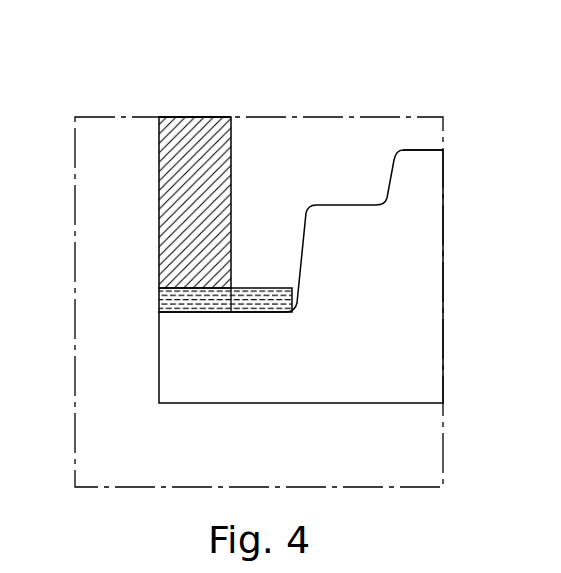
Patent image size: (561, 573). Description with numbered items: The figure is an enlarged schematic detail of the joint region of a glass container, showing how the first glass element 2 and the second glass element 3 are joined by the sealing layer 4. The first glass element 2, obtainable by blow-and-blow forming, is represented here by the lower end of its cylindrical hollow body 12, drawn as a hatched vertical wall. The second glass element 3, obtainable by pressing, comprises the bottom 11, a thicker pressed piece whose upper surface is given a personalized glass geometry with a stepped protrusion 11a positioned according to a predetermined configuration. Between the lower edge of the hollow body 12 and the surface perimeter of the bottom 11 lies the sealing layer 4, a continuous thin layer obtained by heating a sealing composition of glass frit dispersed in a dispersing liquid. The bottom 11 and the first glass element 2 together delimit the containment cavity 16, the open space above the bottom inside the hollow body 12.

The first glass element 2 is at (200, 117).
The second glass element 3 is at (443, 292).
The sealing layer 4 is at (159, 303).
The bottom 11 is at (390, 373).
The protrusion 11a is at (420, 163).
The cylindrical hollow body 12 is at (160, 197).
The containment cavity 16 is at (293, 162).